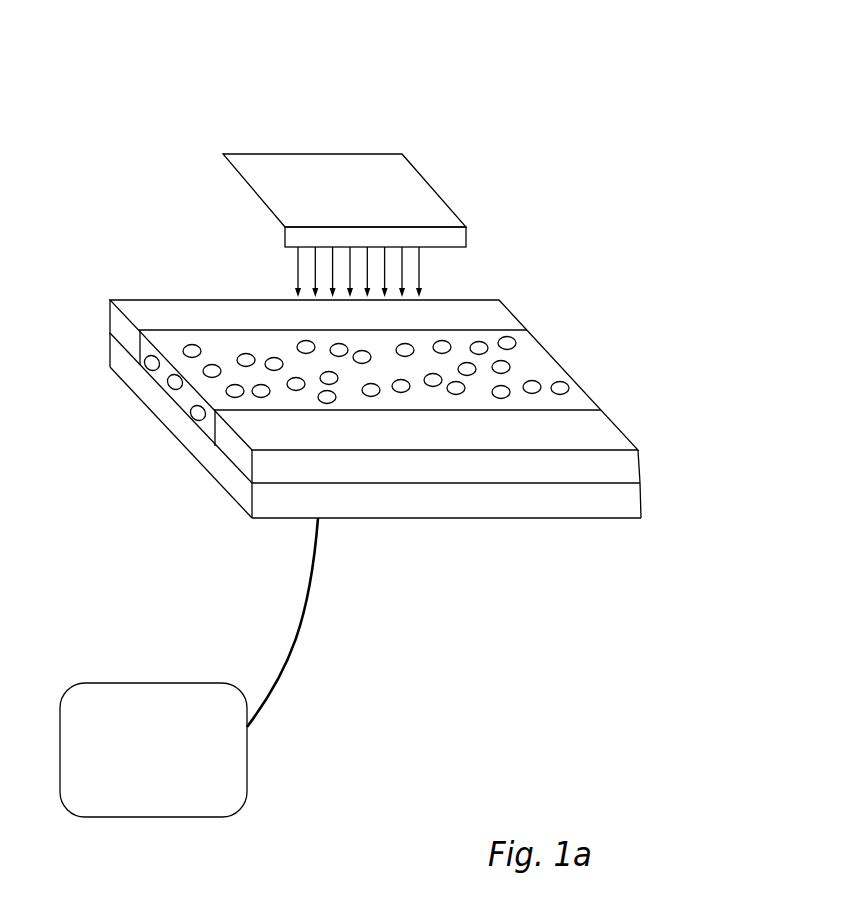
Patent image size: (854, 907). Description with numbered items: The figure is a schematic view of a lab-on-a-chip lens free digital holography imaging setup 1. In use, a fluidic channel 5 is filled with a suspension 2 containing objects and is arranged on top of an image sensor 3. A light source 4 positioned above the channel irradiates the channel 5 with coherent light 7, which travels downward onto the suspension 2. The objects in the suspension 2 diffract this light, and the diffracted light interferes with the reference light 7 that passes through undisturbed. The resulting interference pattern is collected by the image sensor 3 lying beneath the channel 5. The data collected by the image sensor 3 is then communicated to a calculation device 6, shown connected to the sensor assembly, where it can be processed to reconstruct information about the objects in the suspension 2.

The lens free digital holography imaging setup 1 is at (622, 113).
The suspension 2 is at (526, 367).
The image sensor 3 is at (228, 477).
The light source 4 is at (311, 175).
The fluidic channel 5 is at (172, 392).
The calculation device 6 is at (153, 750).
The coherent light 7 is at (297, 267).